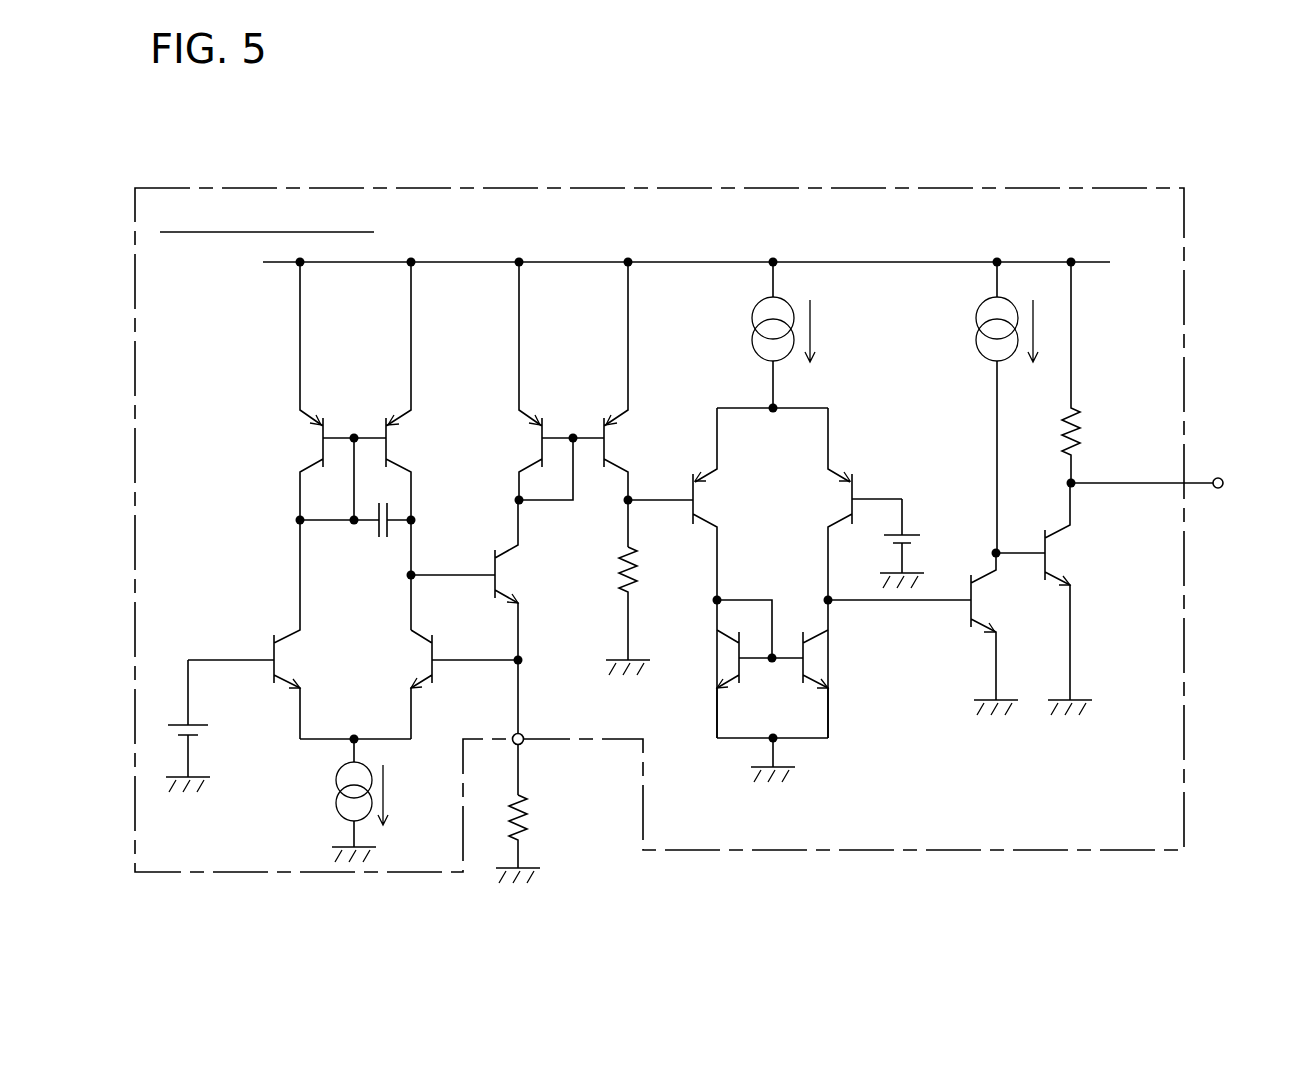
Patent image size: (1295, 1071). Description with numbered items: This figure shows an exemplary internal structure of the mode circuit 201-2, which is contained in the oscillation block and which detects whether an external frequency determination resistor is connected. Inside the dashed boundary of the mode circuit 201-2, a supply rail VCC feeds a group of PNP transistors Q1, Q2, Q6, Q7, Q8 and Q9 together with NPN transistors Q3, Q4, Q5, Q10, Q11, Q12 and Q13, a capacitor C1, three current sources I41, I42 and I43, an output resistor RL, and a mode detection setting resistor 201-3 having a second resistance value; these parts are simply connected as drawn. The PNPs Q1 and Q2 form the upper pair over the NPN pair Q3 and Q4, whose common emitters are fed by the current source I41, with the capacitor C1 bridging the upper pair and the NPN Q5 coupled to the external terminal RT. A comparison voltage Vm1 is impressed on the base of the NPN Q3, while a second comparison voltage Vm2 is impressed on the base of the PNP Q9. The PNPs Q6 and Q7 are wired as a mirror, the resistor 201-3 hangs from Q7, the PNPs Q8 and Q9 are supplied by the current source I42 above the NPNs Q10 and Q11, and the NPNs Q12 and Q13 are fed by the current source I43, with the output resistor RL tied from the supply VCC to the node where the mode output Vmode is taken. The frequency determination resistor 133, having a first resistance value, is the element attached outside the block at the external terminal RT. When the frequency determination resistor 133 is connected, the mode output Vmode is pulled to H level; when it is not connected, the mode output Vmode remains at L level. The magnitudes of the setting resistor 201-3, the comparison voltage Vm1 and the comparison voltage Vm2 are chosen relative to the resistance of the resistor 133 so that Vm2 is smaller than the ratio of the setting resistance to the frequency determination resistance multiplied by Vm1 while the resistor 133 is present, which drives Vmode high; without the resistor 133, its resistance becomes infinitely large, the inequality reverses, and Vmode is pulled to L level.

The mode circuit 201-2 is at (576, 190).
The mode detection setting resistor 201-3 is at (662, 611).
The frequency determination resistor 133 is at (543, 813).
The external terminal RT is at (536, 727).
The PNP transistor Q1 is at (327, 391).
The PNP transistor Q2 is at (416, 446).
The NPN transistor Q3 is at (262, 629).
The NPN transistor Q4 is at (409, 684).
The NPN transistor Q5 is at (481, 619).
The PNP transistor Q6 is at (545, 383).
The PNP transistor Q7 is at (648, 404).
The PNP transistor Q8 is at (722, 573).
The PNP transistor Q9 is at (848, 573).
The NPN transistor Q10 is at (739, 669).
The NPN transistor Q11 is at (844, 691).
The NPN transistor Q12 is at (1010, 632).
The NPN transistor Q13 is at (1060, 599).
The capacitor C1 is at (356, 504).
The comparison voltage Vm1 is at (218, 726).
The comparison voltage Vm2 is at (930, 543).
The current source I41 is at (339, 799).
The current source I42 is at (768, 337).
The current source I43 is at (984, 407).
The output resistor RL is at (1092, 375).
The supply voltage VCC is at (715, 264).
The mode output Vmode is at (1177, 467).